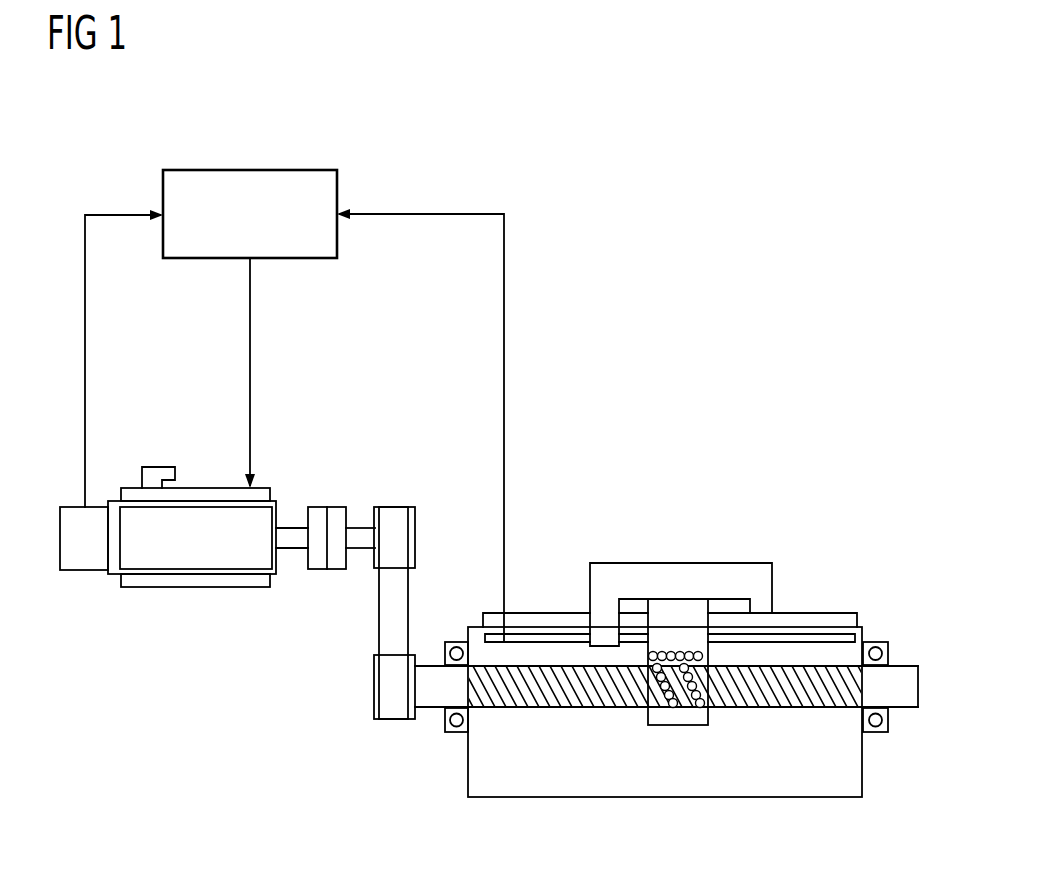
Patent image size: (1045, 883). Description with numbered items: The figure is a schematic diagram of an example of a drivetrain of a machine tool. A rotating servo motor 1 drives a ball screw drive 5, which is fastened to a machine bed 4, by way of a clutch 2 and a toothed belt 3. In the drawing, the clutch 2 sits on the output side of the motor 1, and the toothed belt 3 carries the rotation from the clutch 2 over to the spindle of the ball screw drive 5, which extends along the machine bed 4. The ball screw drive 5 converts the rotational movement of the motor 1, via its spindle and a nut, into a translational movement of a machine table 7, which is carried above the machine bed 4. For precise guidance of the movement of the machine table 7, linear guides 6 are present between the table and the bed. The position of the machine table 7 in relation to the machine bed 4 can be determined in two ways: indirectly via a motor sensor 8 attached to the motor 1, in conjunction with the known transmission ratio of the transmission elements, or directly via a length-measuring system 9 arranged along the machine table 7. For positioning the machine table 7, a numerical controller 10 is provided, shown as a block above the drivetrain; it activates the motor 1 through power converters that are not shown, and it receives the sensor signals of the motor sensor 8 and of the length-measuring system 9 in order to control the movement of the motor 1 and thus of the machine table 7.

The servo motor 1 is at (203, 516).
The clutch 2 is at (322, 517).
The toothed belt 3 is at (388, 627).
The machine bed 4 is at (535, 782).
The ball screw drive 5 is at (677, 712).
The linear guides 6 is at (832, 622).
The machine table 7 is at (625, 573).
The motor sensor 8 is at (85, 558).
The length-measuring system 9 is at (800, 637).
The numerical controller 10 is at (279, 170).